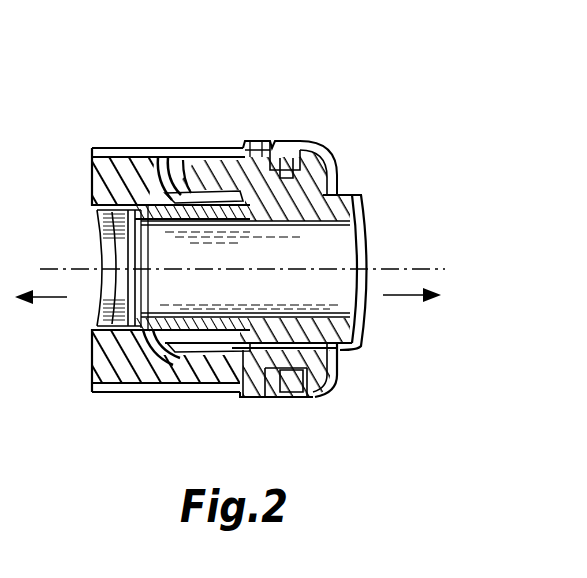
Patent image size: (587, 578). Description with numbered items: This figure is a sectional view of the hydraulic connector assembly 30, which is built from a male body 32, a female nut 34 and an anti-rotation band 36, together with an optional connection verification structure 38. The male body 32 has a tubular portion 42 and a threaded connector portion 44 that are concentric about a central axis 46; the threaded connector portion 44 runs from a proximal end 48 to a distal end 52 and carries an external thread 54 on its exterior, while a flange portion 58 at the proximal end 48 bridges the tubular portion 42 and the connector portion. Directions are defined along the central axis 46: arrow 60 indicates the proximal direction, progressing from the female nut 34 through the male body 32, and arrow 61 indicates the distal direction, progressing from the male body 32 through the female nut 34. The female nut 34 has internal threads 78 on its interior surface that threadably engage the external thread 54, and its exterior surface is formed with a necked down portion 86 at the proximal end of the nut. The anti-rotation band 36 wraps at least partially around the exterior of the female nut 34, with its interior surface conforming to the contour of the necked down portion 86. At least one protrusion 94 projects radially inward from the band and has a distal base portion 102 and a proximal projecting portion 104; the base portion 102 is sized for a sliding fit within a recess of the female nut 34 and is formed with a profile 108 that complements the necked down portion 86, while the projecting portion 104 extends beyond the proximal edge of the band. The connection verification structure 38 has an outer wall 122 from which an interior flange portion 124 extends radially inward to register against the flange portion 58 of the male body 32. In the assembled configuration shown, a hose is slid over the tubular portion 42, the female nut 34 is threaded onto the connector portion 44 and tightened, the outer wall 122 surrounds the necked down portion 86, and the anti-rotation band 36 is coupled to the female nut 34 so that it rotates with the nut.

The hydraulic connector assembly 30 is at (138, 144).
The male body 32 is at (346, 177).
The female nut 34 is at (87, 185).
The anti-rotation band 36 is at (255, 405).
The connection verification structure 38 is at (305, 143).
The tubular portion 42 is at (110, 243).
The threaded connector portion 44 is at (195, 372).
The central axis 46 is at (417, 267).
The proximal end 48 is at (323, 395).
The distal end 52 is at (159, 165).
The external thread 54 is at (184, 178).
The flange portion 58 is at (337, 195).
The arrow 60 is at (410, 300).
The arrow 61 is at (50, 302).
The internal threads 78 is at (255, 224).
The necked down portion 86 is at (240, 146).
The protrusion 94 is at (332, 360).
The base portion 102 is at (272, 403).
The projecting portion 104 is at (300, 405).
The profile 108 is at (240, 393).
The outer wall 122 is at (290, 145).
The interior flange portion 124 is at (321, 155).